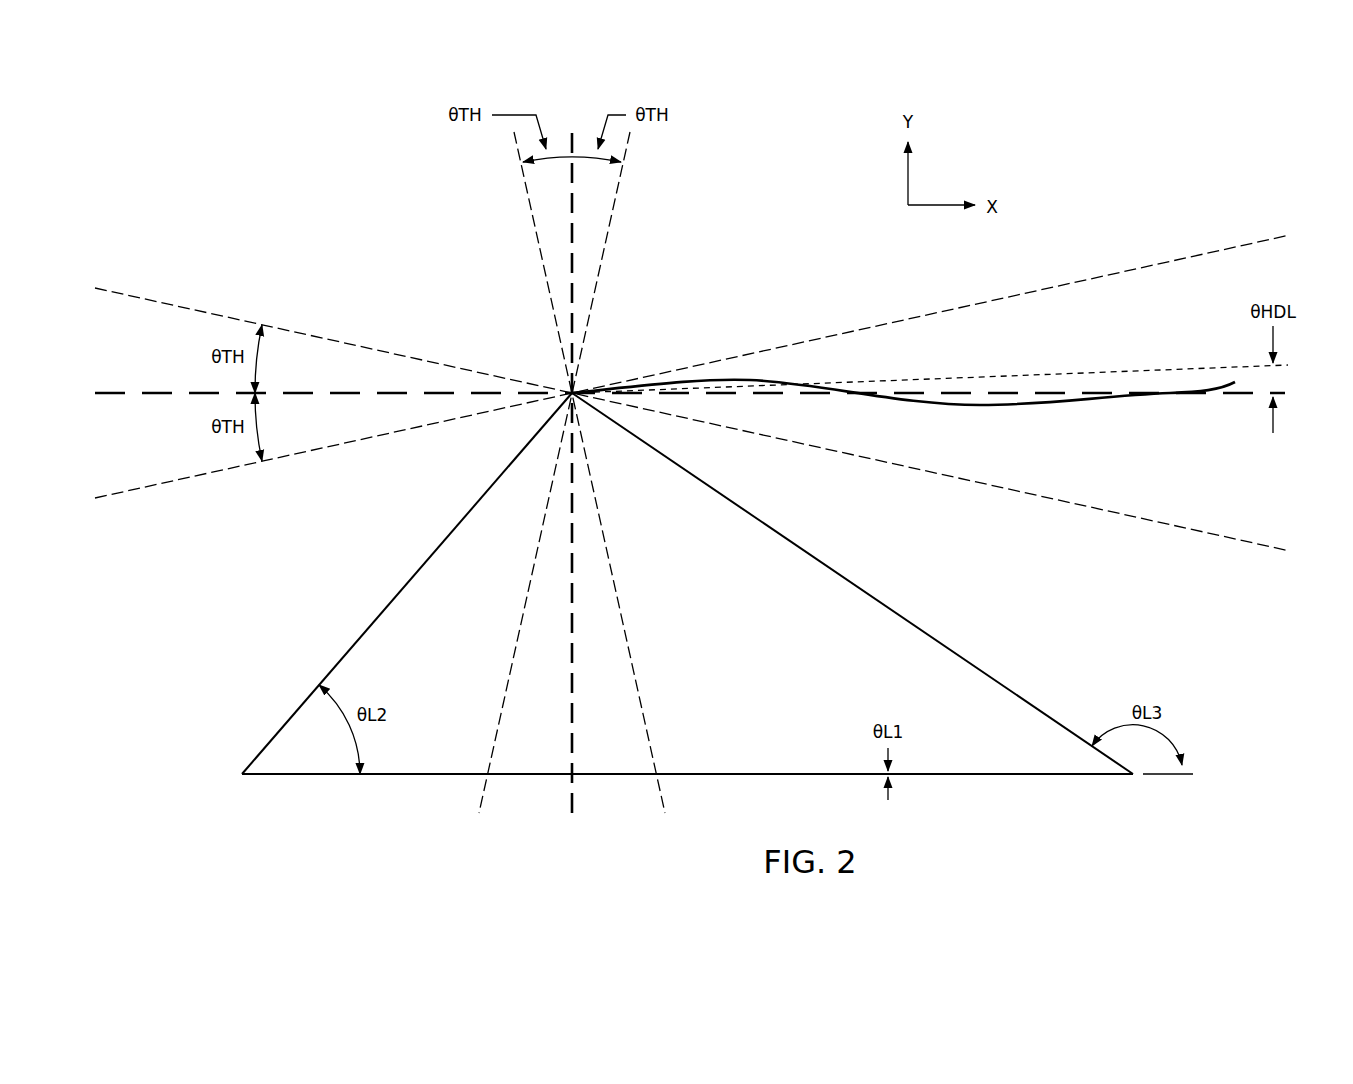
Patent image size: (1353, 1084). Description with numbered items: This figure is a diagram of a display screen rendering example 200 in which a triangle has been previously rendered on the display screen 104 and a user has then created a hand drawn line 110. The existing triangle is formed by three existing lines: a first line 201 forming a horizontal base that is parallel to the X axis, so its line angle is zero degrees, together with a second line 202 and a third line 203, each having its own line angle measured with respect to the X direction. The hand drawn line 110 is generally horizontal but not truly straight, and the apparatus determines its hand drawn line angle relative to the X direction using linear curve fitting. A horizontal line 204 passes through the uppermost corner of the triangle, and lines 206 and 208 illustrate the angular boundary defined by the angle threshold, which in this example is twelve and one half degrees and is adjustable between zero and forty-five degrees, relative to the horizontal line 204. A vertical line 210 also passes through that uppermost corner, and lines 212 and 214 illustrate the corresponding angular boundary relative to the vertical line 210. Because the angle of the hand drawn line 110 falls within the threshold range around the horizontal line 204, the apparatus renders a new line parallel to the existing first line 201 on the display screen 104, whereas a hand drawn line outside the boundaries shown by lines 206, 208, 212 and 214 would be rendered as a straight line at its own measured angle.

The display screen 104 is at (352, 210).
The display screen rendering example 200 is at (395, 294).
The horizontal line 204 is at (154, 391).
The angular boundary line 206 is at (158, 300).
The angular boundary line 208 is at (145, 489).
The vertical line 210 is at (572, 786).
The angular boundary line 212 is at (531, 205).
The angular boundary line 214 is at (612, 205).
The second line 202 is at (406, 584).
The third line 203 is at (826, 565).
The first line 201 is at (1017, 777).
The hand drawn line 110 is at (993, 406).